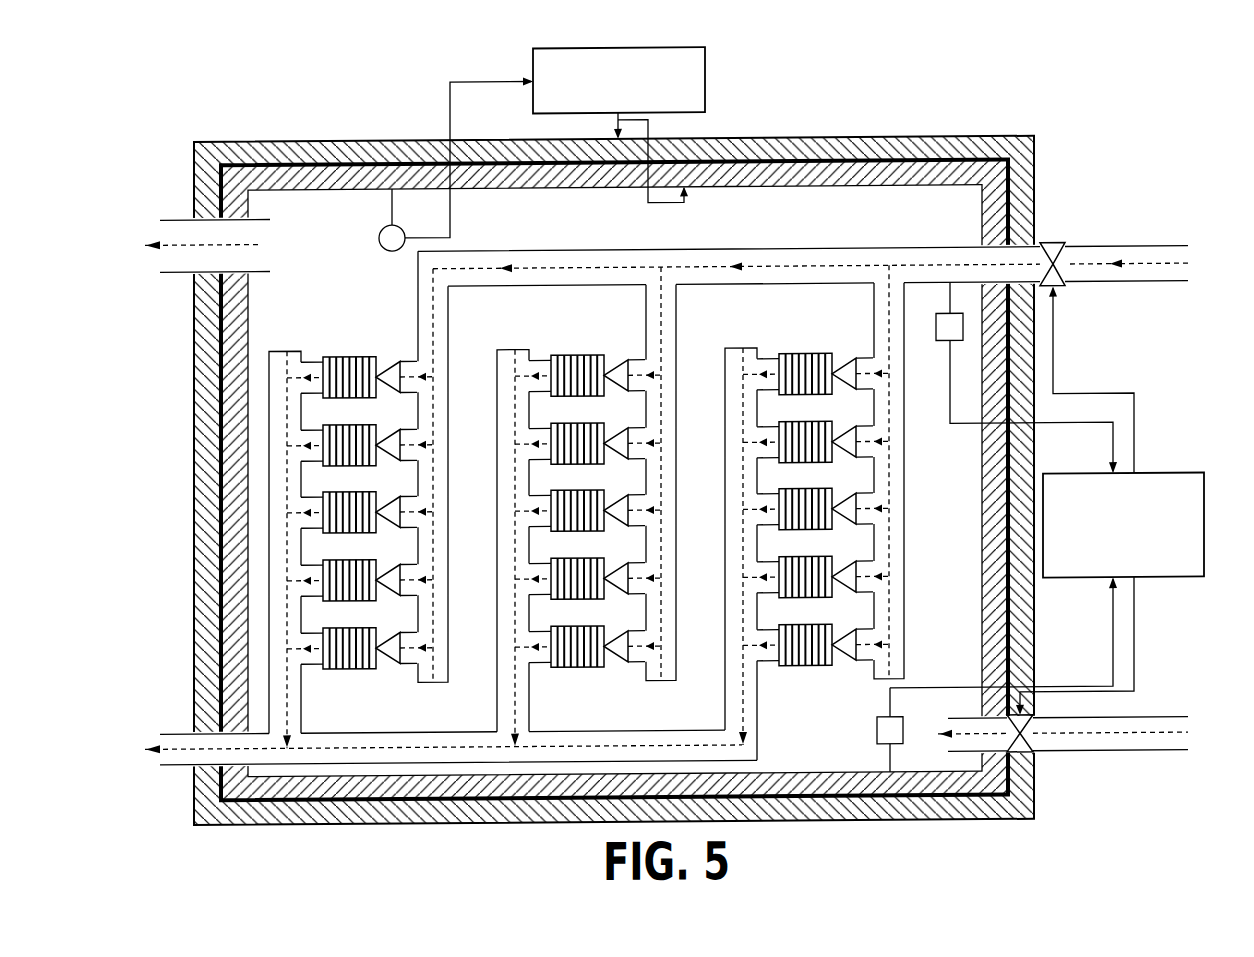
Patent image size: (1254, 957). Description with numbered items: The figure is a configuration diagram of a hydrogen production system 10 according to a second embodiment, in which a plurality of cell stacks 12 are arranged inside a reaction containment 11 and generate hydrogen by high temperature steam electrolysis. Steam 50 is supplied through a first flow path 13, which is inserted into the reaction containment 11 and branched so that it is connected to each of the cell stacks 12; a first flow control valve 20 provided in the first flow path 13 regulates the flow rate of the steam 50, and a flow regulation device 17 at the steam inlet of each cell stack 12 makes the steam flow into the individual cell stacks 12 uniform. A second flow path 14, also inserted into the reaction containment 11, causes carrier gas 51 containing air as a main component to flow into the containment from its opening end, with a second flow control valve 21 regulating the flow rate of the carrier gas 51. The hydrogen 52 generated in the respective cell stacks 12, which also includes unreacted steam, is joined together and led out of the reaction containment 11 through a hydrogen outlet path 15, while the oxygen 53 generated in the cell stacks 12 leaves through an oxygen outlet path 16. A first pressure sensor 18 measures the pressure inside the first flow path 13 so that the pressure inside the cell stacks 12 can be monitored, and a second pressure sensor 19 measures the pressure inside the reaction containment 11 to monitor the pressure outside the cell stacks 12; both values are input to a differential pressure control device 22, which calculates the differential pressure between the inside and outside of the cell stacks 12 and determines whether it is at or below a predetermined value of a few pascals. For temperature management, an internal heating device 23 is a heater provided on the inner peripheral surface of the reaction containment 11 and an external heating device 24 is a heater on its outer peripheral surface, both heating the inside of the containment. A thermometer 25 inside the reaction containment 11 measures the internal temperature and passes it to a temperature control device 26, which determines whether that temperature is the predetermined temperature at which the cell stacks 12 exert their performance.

The hydrogen production system 10 is at (674, 423).
The reaction containment 11 is at (813, 162).
The cell stack 12 is at (341, 350).
The first flow path 13 is at (932, 250).
The second flow path 14 is at (1102, 755).
The hydrogen outlet path 15 is at (600, 729).
The oxygen outlet path 16 is at (262, 219).
The flow regulation device 17 is at (382, 362).
The first pressure sensor 18 is at (945, 345).
The second pressure sensor 19 is at (877, 732).
The first flow control valve 20 is at (1053, 246).
The second flow control valve 21 is at (1032, 779).
The differential pressure control device 22 is at (1150, 477).
The internal heating device 23 is at (890, 192).
The external heating device 24 is at (742, 139).
The thermometer 25 is at (380, 230).
The temperature control device 26 is at (643, 48).
The steam 50 is at (1140, 262).
The carrier gas 51 is at (1145, 737).
The hydrogen 52 is at (385, 744).
The oxygen 53 is at (262, 244).